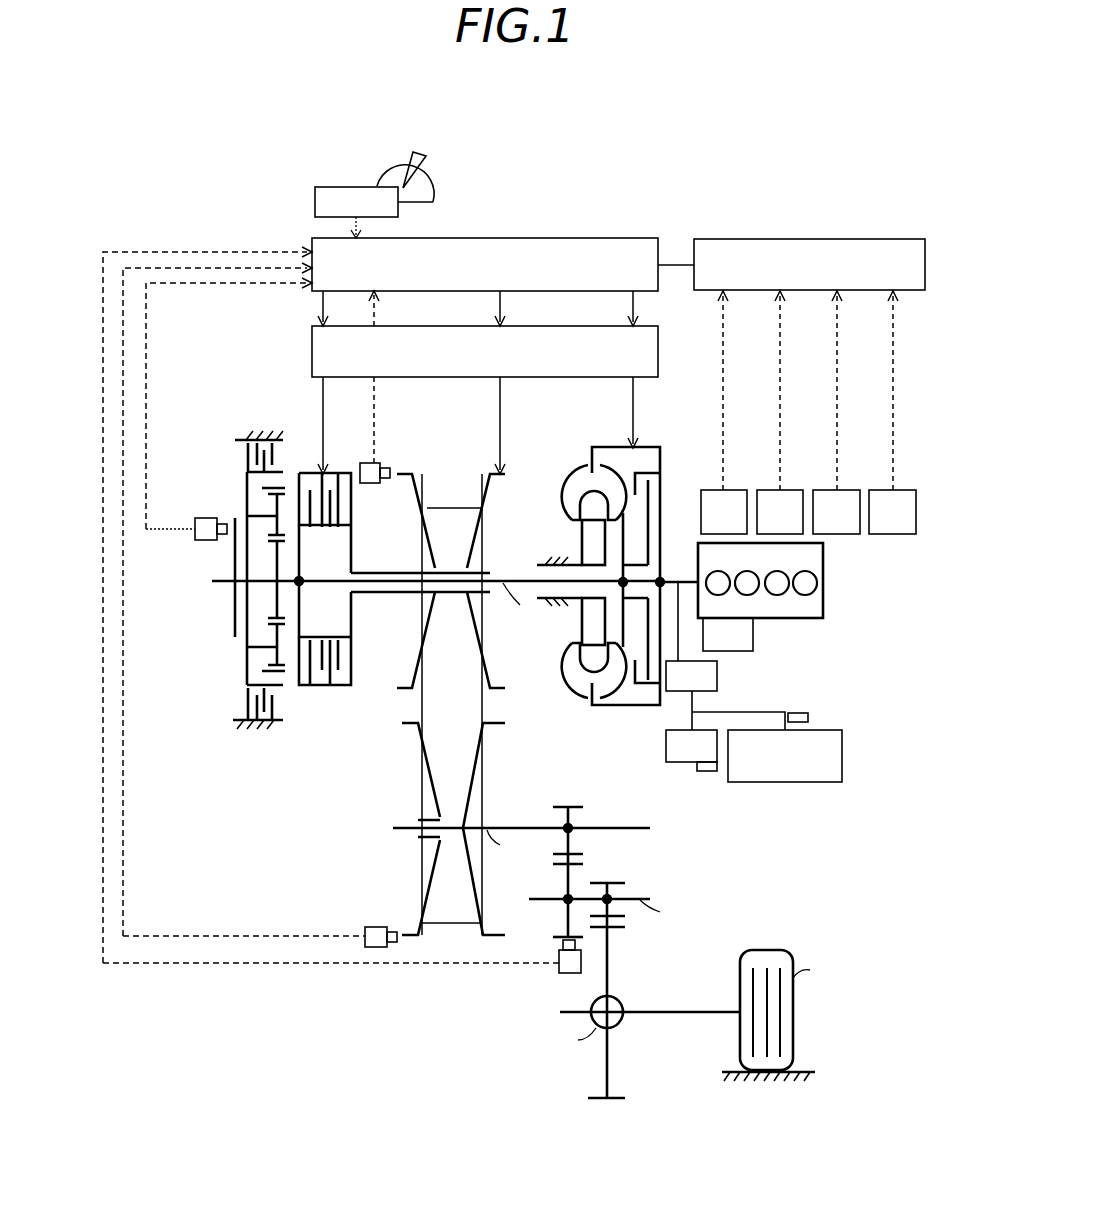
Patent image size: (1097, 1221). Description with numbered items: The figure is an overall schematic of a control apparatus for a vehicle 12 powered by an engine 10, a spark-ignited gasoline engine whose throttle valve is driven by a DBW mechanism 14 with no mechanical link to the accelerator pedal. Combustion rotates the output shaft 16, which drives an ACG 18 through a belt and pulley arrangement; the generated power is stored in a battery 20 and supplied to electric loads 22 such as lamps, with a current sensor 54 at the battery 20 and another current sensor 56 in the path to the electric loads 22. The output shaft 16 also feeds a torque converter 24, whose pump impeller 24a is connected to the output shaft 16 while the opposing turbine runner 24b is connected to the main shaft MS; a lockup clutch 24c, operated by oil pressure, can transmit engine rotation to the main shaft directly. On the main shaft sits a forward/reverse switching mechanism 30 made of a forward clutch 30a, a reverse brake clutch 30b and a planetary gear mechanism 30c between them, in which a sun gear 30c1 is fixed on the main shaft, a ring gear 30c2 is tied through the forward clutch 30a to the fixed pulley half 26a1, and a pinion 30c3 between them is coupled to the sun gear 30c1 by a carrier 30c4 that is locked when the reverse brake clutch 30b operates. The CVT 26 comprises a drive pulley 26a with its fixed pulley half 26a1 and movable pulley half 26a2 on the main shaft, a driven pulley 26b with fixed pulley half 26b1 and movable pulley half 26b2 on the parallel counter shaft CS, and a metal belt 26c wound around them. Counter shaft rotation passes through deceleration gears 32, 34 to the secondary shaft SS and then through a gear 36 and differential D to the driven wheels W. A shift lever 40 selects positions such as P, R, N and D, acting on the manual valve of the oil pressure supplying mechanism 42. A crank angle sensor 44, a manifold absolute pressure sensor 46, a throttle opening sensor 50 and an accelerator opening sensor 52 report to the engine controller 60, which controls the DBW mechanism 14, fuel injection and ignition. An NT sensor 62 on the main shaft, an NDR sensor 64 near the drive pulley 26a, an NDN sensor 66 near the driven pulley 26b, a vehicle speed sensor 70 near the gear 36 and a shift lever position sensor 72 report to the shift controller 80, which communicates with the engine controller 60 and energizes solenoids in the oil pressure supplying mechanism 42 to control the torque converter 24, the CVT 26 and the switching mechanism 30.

The engine 10 is at (824, 603).
The vehicle 12 is at (767, 150).
The DBW mechanism 14 is at (753, 634).
The output shaft 16 is at (680, 578).
The ACG 18 is at (717, 675).
The battery 20 is at (666, 745).
The electric loads 22 is at (808, 782).
The torque converter 24 is at (601, 440).
The pump impeller 24a is at (580, 482).
The turbine runner 24b is at (612, 700).
The lockup clutch 24c is at (655, 473).
The CVT 26 is at (496, 655).
The drive pulley 26a is at (487, 606).
The fixed pulley half 26a1 is at (413, 475).
The movable pulley half 26a2 is at (482, 505).
The driven pulley 26b is at (416, 802).
The fixed pulley half 26b1 is at (495, 726).
The movable pulley half 26b2 is at (413, 726).
The metal belt 26c is at (425, 710).
The forward/reverse switching mechanism 30 is at (229, 452).
The forward clutch 30a is at (323, 525).
The reverse brake clutch 30b is at (250, 452).
The planetary gear mechanism 30c is at (266, 563).
The sun gear 30c1 is at (272, 600).
The ring gear 30c2 is at (324, 687).
The pinion 30c3 is at (270, 650).
The carrier 30c4 is at (247, 668).
The deceleration gear 32 is at (575, 806).
The deceleration gear 34 is at (555, 932).
The gear 36 is at (608, 883).
The shift lever 40 is at (420, 153).
The oil pressure supplying mechanism 42 is at (649, 326).
The crank angle sensor 44 is at (725, 490).
The manifold absolute pressure sensor 46 is at (783, 490).
The throttle opening sensor 50 is at (841, 490).
The accelerator opening sensor 52 is at (897, 490).
The current sensor 54 is at (708, 772).
The current sensor 56 is at (808, 718).
The engine controller 60 is at (866, 239).
The NT sensor 62 is at (200, 518).
The NDR sensor 64 is at (366, 463).
The NDN sensor 66 is at (355, 932).
The vehicle speed sensor 70 is at (558, 974).
The shift lever position sensor 72 is at (328, 187).
The shift controller 80 is at (590, 238).